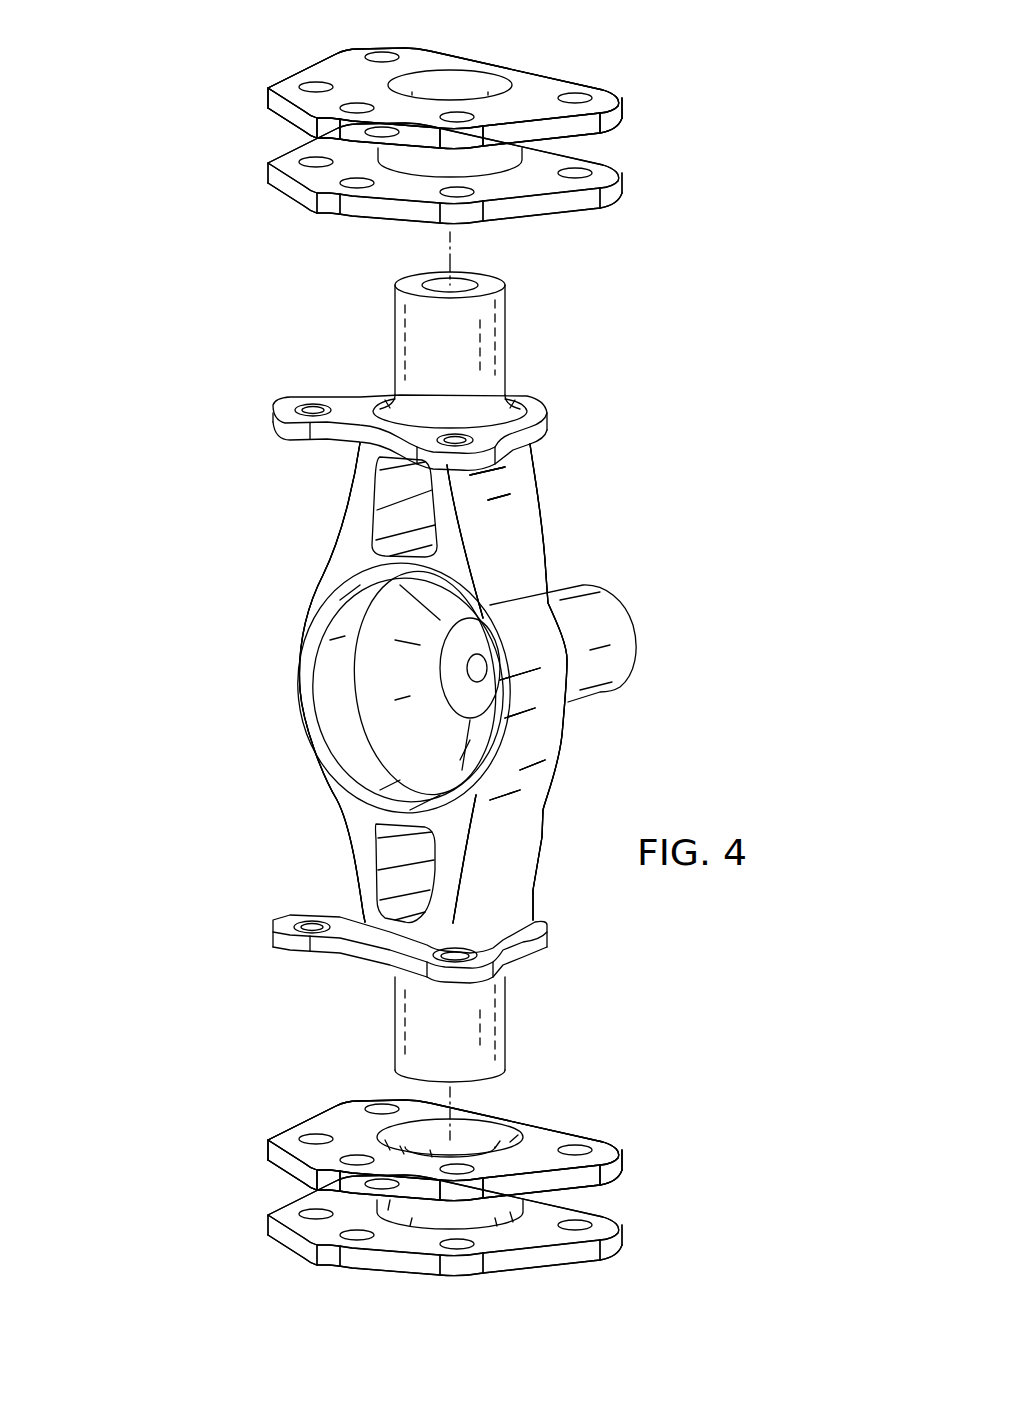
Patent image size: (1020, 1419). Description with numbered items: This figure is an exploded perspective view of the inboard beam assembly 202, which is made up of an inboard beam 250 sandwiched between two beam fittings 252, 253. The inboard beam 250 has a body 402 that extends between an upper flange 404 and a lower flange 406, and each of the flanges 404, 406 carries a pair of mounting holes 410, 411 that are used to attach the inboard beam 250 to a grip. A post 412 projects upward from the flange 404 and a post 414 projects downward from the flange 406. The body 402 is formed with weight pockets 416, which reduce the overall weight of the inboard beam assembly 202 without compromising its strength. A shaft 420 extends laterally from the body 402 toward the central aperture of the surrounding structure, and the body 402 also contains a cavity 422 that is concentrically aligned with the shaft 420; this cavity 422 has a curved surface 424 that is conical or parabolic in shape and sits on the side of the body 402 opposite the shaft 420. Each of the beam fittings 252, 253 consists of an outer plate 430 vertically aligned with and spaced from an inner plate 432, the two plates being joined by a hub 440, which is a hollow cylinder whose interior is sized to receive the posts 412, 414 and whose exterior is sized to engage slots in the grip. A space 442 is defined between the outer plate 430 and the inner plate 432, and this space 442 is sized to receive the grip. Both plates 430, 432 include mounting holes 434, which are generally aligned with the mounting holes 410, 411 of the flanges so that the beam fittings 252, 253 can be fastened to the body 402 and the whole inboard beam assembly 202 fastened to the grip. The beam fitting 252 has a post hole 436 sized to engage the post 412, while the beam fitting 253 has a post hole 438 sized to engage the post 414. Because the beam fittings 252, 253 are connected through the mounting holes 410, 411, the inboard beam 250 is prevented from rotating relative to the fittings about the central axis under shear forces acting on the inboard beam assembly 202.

The inboard beam assembly 202 is at (128, 114).
The inboard beam 250 is at (547, 522).
The beam fitting 252 is at (353, 50).
The beam fitting 253 is at (350, 1100).
The body 402 is at (548, 560).
The flange 404 is at (273, 418).
The flange 406 is at (273, 943).
The mounting hole 410 is at (311, 412).
The mounting hole 411 is at (455, 440).
The post 412 is at (505, 340).
The post 414 is at (505, 1025).
The weight pocket 416 is at (390, 505).
The shaft 420 is at (623, 603).
The cavity 422 is at (337, 730).
The curved surface 424 is at (378, 620).
The outer plate 430 is at (622, 108).
The inner plate 432 is at (622, 183).
The mounting hole 434 is at (316, 86).
The post hole 436 is at (448, 80).
The post hole 438 is at (412, 1137).
The hub 440 is at (480, 155).
The space 442 is at (620, 145).